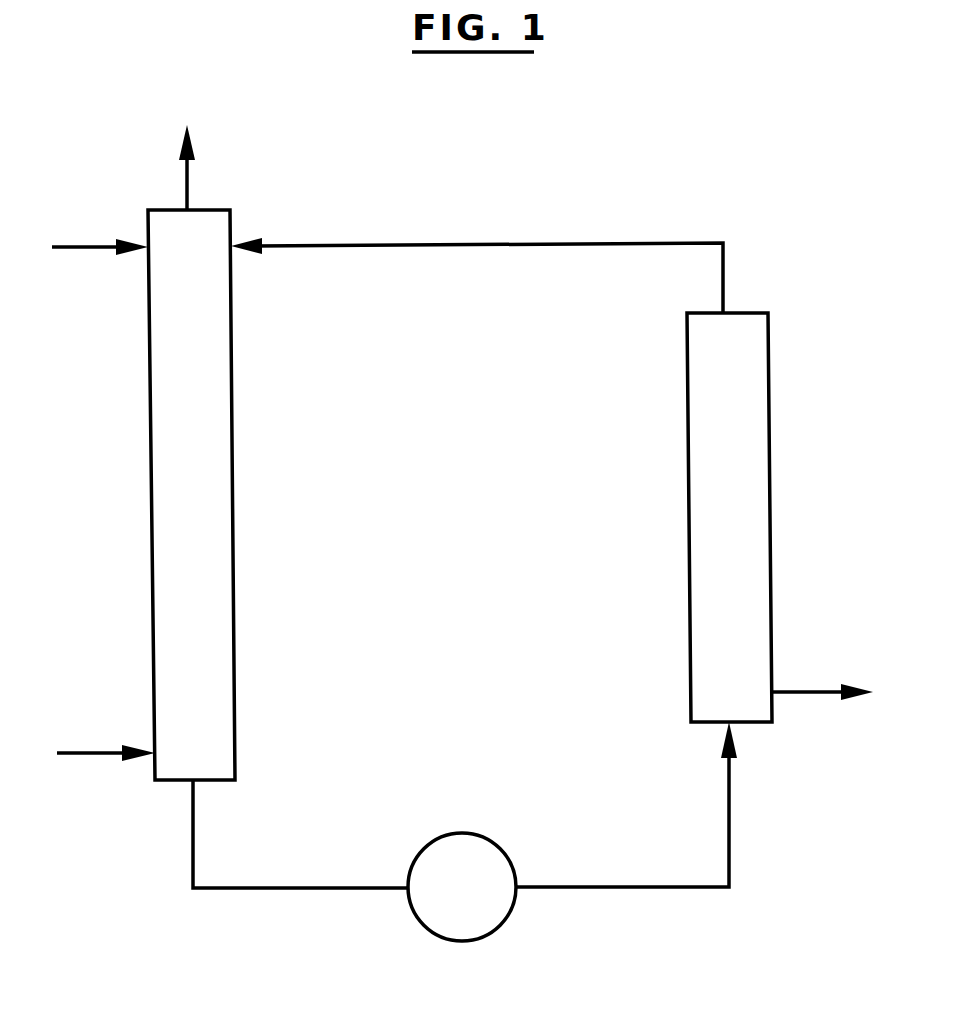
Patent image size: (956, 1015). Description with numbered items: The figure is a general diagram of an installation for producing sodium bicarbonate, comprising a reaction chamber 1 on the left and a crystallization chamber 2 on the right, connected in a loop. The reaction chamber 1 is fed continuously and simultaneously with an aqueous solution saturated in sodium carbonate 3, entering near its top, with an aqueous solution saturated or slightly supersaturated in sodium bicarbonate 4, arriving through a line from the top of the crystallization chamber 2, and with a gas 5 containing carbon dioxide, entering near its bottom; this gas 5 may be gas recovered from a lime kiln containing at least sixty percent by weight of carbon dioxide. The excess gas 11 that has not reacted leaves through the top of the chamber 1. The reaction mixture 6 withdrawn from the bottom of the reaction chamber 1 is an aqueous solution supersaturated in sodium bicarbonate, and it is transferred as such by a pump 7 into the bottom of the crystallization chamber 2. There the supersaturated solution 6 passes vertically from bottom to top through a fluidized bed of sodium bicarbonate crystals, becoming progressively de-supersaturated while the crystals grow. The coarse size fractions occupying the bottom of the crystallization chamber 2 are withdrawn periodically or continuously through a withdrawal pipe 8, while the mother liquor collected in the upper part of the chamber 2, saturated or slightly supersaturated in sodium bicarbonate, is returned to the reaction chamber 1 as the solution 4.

The reaction chamber 1 is at (233, 527).
The crystallization chamber 2 is at (770, 420).
The aqueous solution saturated in sodium carbonate 3 is at (102, 249).
The aqueous solution saturated in sodium bicarbonate 4 is at (445, 243).
The gas containing carbon dioxide 5 is at (118, 755).
The reaction mixture 6 is at (300, 889).
The pump 7 is at (459, 918).
The withdrawal pipe 8 is at (788, 694).
The excess gas 11 is at (189, 176).